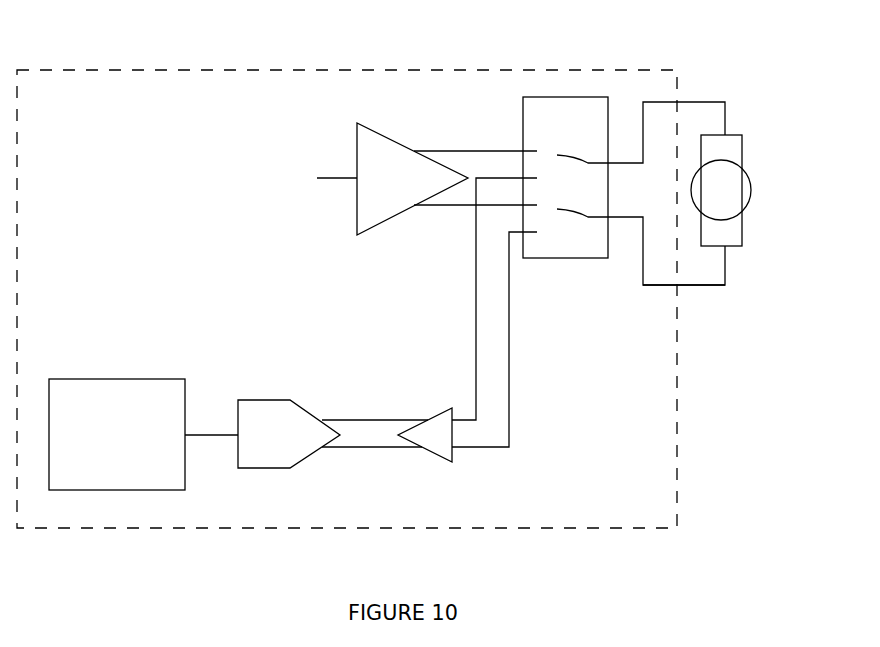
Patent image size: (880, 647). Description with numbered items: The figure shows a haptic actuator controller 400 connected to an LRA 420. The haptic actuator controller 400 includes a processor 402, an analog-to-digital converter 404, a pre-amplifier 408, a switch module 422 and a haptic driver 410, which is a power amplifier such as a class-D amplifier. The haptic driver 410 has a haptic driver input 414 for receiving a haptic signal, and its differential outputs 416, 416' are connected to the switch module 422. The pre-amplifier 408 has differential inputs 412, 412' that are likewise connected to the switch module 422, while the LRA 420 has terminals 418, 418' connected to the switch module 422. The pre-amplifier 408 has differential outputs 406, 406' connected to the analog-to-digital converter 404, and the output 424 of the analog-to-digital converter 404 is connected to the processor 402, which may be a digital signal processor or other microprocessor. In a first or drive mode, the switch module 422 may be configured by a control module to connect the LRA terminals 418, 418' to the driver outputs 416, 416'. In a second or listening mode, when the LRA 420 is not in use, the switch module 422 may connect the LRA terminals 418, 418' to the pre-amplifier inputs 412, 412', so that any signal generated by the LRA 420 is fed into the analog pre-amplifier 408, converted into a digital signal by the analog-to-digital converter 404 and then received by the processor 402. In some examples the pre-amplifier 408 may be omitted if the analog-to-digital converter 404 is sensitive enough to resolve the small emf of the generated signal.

The haptic actuator controller 400 is at (315, 70).
The processor 402 is at (103, 379).
The analog-to-digital converter 404 is at (263, 400).
The differential output 406 is at (375, 386).
The differential output 406' is at (372, 479).
The pre-amplifier 408 is at (443, 462).
The haptic driver 410 is at (380, 135).
The differential input 412 is at (480, 299).
The differential input 412' is at (521, 339).
The haptic driver input 414 is at (322, 187).
The differential output 416 is at (475, 115).
The differential output 416' is at (465, 223).
The LRA terminal 418 is at (692, 157).
The LRA terminal 418' is at (708, 318).
The LRA 420 is at (752, 197).
The switch module 422 is at (562, 258).
The output 424 is at (203, 435).